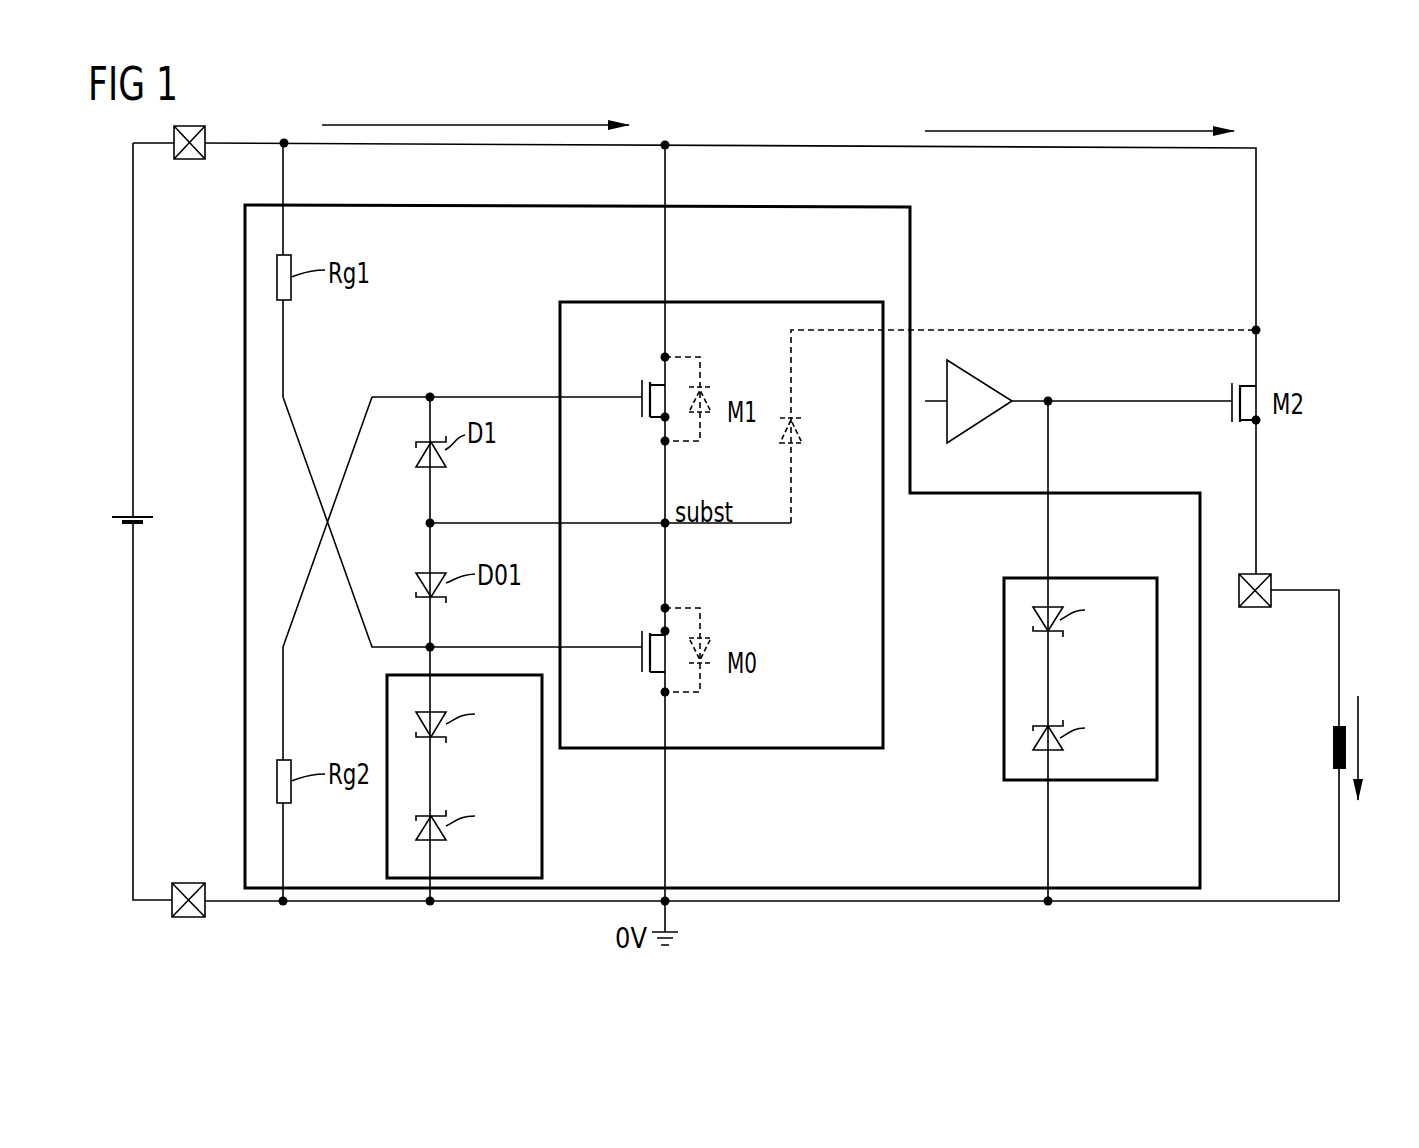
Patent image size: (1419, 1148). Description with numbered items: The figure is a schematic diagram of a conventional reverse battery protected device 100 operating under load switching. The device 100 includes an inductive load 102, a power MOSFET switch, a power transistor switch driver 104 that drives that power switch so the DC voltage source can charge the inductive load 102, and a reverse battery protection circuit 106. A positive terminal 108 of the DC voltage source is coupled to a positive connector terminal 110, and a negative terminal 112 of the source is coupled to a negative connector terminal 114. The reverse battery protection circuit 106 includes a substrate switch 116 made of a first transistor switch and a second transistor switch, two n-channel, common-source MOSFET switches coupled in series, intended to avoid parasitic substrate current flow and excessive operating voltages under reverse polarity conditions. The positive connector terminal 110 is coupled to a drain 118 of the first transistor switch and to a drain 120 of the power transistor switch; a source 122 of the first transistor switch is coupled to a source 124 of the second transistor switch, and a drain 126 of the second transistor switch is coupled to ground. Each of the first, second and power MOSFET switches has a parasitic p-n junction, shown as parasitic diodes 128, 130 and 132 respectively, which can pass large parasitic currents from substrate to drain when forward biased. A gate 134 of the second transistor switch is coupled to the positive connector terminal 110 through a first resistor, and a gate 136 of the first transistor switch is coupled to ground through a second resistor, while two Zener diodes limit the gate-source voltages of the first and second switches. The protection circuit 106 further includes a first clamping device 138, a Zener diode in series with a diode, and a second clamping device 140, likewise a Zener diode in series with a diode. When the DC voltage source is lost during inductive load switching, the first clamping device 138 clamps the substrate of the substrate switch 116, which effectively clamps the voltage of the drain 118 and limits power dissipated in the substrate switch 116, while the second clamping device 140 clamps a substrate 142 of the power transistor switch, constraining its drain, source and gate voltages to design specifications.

The reverse battery protected device 100 is at (1333, 175).
The inductive load 102 is at (1331, 748).
The power transistor switch driver 104 is at (983, 380).
The reverse battery protection circuit 106 is at (910, 270).
The positive terminal 108 is at (125, 516).
The positive connector terminal 110 is at (190, 160).
The negative terminal 112 is at (128, 526).
The negative connector terminal 114 is at (188, 882).
The substrate switch 116 is at (765, 300).
The drain of first transistor switch M1 118 is at (668, 355).
The drain of power transistor switch M2 120 is at (1260, 330).
The source of first transistor switch M1 122 is at (668, 443).
The source of second transistor switch M0 124 is at (668, 606).
The drain of second transistor switch M0 126 is at (668, 694).
The parasitic diode 128 is at (706, 404).
The parasitic diode 130 is at (708, 652).
The parasitic diode 132 is at (800, 430).
The gate of second transistor switch M0 134 is at (641, 643).
The gate of first transistor switch M1 136 is at (641, 392).
The first clamping device 138 is at (543, 812).
The second clamping device 140 is at (1003, 680).
The substrate of power transistor switch M2 142 is at (1256, 608).